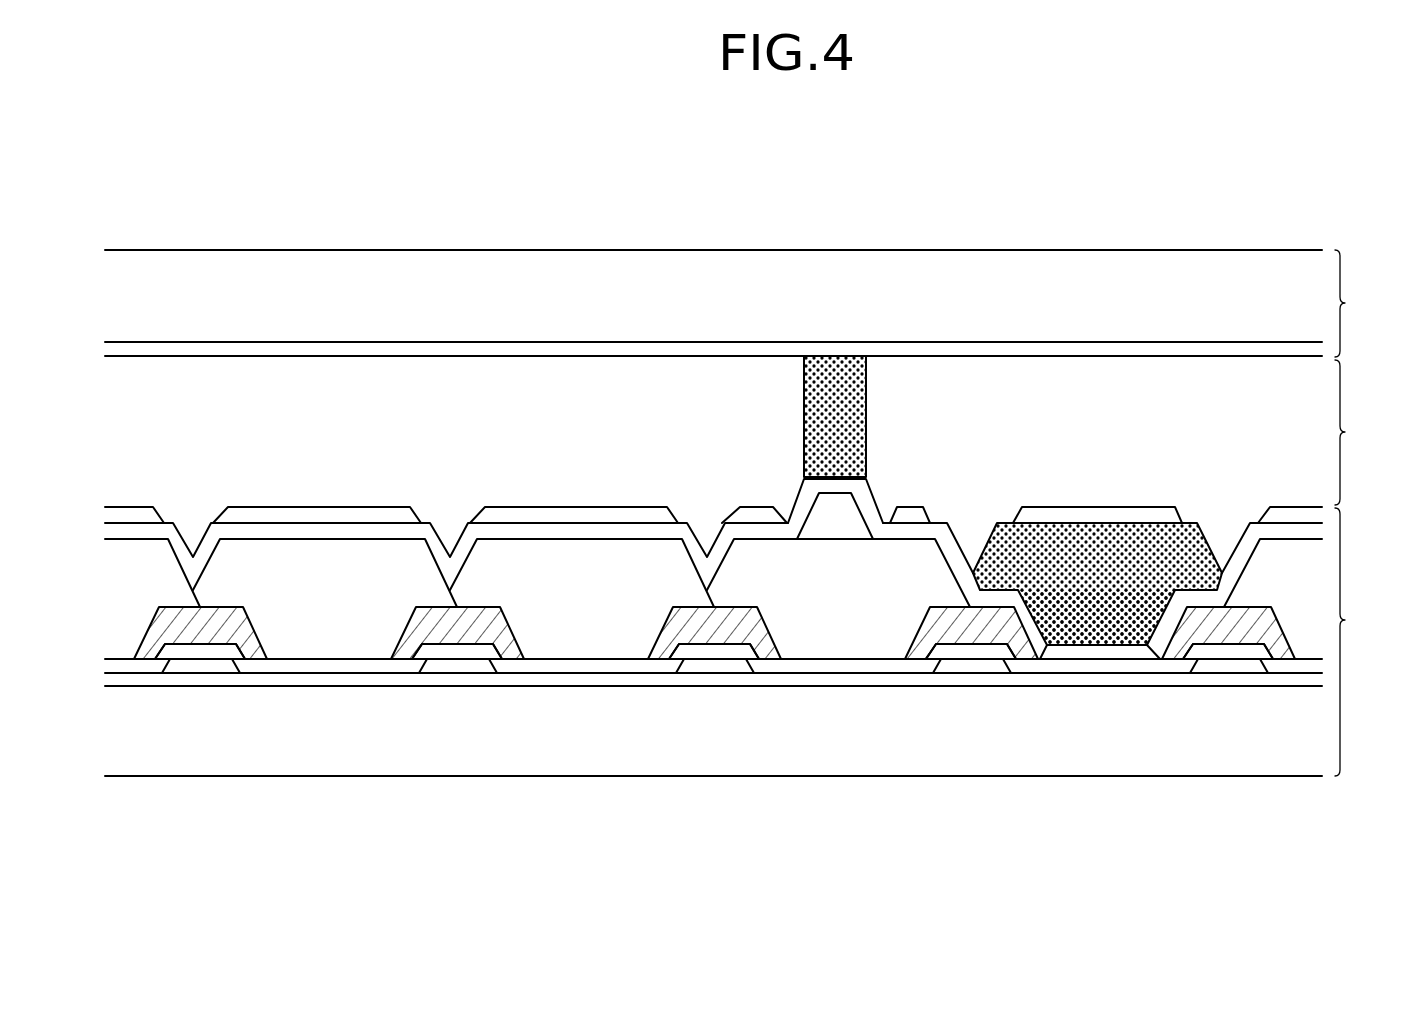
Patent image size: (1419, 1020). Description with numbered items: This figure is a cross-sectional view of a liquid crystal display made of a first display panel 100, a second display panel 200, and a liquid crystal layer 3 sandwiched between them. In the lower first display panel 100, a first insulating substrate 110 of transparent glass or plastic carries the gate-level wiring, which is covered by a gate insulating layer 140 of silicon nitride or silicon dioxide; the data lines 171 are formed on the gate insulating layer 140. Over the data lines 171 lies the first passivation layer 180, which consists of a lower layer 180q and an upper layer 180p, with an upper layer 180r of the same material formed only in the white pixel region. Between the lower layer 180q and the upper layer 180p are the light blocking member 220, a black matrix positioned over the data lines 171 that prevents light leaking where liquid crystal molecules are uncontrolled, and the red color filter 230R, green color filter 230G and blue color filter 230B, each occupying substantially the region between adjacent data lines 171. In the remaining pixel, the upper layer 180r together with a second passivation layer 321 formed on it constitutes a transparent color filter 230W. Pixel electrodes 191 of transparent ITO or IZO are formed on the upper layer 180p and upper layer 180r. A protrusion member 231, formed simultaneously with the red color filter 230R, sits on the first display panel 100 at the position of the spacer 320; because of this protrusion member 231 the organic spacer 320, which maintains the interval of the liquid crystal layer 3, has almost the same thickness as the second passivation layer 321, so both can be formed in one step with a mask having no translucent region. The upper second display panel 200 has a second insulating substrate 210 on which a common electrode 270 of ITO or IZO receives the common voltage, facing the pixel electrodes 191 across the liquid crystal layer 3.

The second display panel 200 is at (748, 266).
The second insulating substrate 210 is at (535, 280).
The common electrode 270 is at (430, 357).
The spacer 320 is at (835, 385).
The liquid crystal layer 3 is at (1045, 357).
The protrusion member 231 is at (825, 522).
The pixel electrode 191 is at (360, 515).
The first passivation layer 180 is at (598, 440).
The upper layer 180p is at (522, 530).
The lower layer 180q is at (572, 670).
The upper layer 180r is at (1088, 650).
The first display panel 100 is at (747, 647).
The first insulating substrate 110 is at (435, 745).
The gate insulating layer 140 is at (530, 678).
The data line 171 is at (708, 668).
The light blocking member 220 is at (755, 618).
The red color filter 230R is at (328, 615).
The green color filter 230G is at (613, 615).
The blue color filter 230B is at (838, 615).
The transparent color filter 230W is at (1160, 855).
The second passivation layer 321 is at (1125, 615).